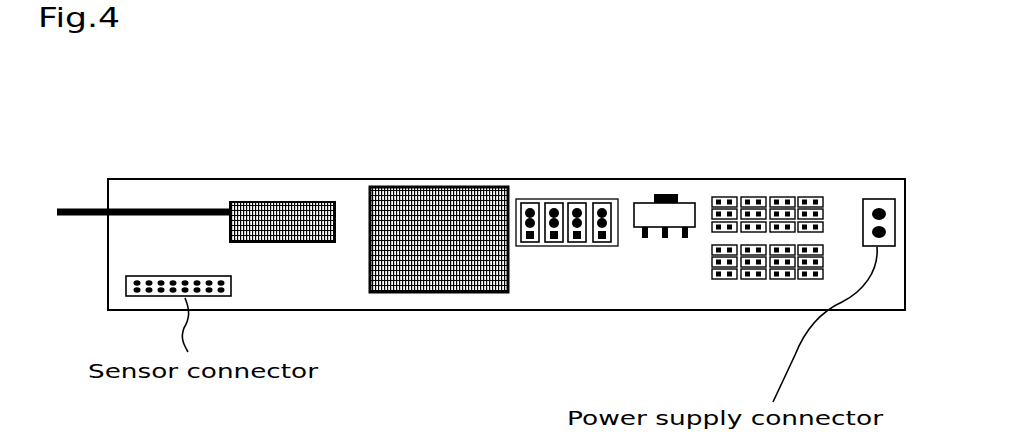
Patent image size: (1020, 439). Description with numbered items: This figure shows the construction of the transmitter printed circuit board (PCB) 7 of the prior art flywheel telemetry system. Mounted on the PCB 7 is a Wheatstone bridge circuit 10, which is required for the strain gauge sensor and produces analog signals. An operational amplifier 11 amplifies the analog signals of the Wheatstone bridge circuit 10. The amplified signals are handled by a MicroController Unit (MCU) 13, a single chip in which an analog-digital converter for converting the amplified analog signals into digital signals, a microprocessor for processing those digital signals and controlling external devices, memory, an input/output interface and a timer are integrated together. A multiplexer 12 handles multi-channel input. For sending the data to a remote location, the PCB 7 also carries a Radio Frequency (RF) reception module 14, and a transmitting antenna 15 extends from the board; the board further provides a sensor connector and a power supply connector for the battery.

The Printed Circuit Board 7 is at (566, 99).
The Wheatstone bridge circuit 10 is at (738, 279).
The operational amplifier 11 is at (555, 212).
The multiplexer 12 is at (686, 196).
The MicroController Unit 13 is at (441, 190).
The Radio Frequency reception module 14 is at (270, 202).
The transmitting antenna 15 is at (122, 200).